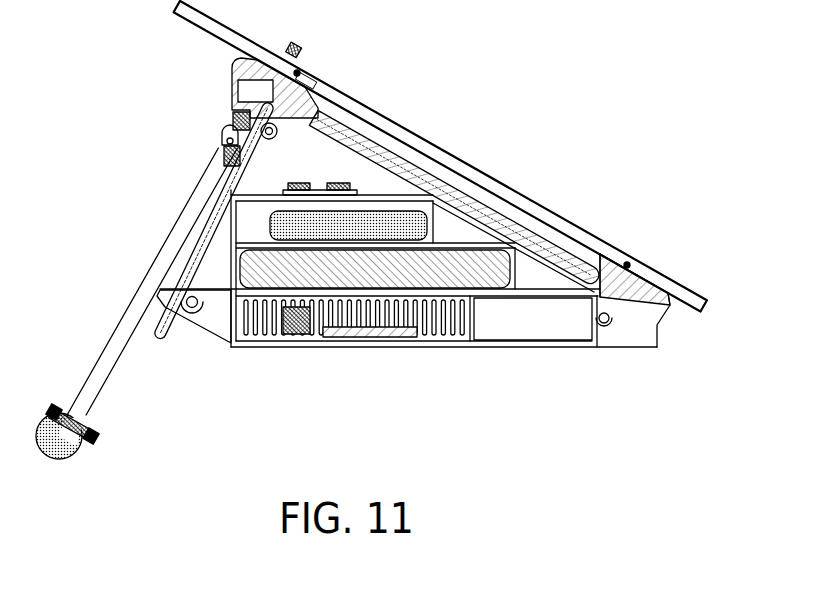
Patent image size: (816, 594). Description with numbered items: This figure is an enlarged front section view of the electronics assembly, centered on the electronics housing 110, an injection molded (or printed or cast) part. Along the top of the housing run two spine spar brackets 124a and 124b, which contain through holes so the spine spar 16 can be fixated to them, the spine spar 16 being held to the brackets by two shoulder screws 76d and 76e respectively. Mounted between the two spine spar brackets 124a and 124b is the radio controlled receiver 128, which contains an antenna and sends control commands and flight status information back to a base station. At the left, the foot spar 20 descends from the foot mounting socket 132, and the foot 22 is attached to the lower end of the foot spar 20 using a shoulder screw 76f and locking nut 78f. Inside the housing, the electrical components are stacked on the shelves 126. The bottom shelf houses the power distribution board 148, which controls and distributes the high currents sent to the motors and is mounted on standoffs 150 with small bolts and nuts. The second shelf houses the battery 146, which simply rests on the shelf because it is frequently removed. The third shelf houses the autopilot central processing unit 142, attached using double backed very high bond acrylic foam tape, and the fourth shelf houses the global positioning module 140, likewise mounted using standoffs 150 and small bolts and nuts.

The spine spar 16 is at (457, 160).
The foot spar 20 is at (153, 291).
The foot 22 is at (87, 463).
The shoulder screw 76d is at (300, 64).
The shoulder screw 76e is at (627, 260).
The shoulder screw 76f is at (98, 442).
The locking nut 78f is at (54, 412).
The electronics housing 110 is at (230, 122).
The spine spar bracket 124a is at (262, 82).
The spine spar bracket 124b is at (640, 297).
The shelves 126 is at (493, 295).
The radio controlled receiver 128 is at (330, 117).
The foot mounting socket 132 is at (150, 266).
The global positioning module 140 is at (293, 156).
The autopilot central processing unit 142 is at (297, 230).
The battery 146 is at (282, 273).
The power distribution board 148 is at (335, 334).
The standoffs 150 is at (281, 334).